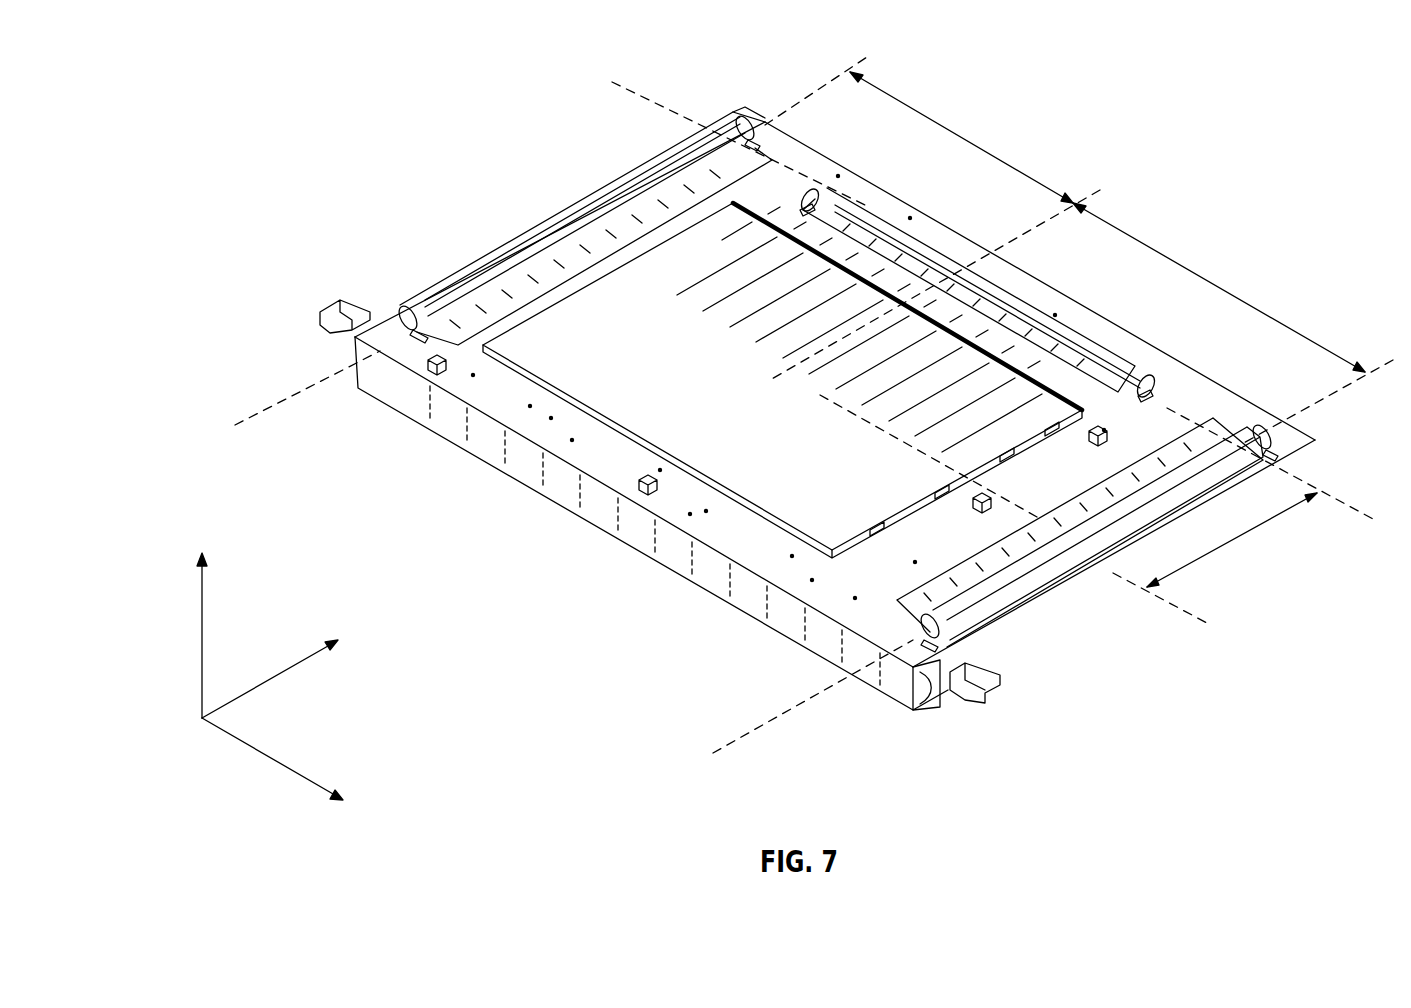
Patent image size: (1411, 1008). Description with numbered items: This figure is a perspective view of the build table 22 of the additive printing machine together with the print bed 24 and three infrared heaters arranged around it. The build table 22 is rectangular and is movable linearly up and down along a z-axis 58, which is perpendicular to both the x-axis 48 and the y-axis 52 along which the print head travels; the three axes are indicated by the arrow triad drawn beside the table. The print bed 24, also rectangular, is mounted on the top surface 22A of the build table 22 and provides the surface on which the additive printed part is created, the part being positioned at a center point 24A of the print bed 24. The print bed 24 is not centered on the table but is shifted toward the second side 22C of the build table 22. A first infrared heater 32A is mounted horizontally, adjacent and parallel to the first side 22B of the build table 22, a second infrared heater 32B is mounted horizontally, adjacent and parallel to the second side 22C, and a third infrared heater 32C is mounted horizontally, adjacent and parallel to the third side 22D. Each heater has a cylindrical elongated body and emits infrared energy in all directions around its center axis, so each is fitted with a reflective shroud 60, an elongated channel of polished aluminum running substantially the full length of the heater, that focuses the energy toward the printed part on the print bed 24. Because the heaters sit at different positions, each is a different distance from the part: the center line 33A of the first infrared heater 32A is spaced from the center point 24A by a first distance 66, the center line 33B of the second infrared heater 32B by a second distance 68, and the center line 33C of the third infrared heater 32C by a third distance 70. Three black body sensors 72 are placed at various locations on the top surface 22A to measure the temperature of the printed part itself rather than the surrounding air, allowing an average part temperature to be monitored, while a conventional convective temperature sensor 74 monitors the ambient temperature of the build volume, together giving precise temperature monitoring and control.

The build table 22 is at (560, 476).
The top surface 22A is at (770, 128).
The first side 22B is at (897, 203).
The second side 22C is at (613, 180).
The third side 22D is at (1000, 642).
The print bed 24 is at (595, 385).
The center point 24A is at (776, 381).
The first infrared heater 32A is at (1055, 332).
The second infrared heater 32B is at (570, 222).
The third infrared heater 32C is at (1040, 552).
The center line 33A is at (1343, 503).
The center line 33B is at (285, 395).
The center line 33C is at (773, 717).
The x-axis 48 is at (258, 757).
The y-axis 52 is at (283, 668).
The z-axis 58 is at (200, 640).
The reflective shroud 60 is at (448, 285).
The first distance 66 is at (1240, 537).
The second distance 68 is at (960, 137).
The third distance 70 is at (1185, 262).
The black body sensor 72 is at (430, 368).
The convective temperature sensor 74 is at (1112, 437).